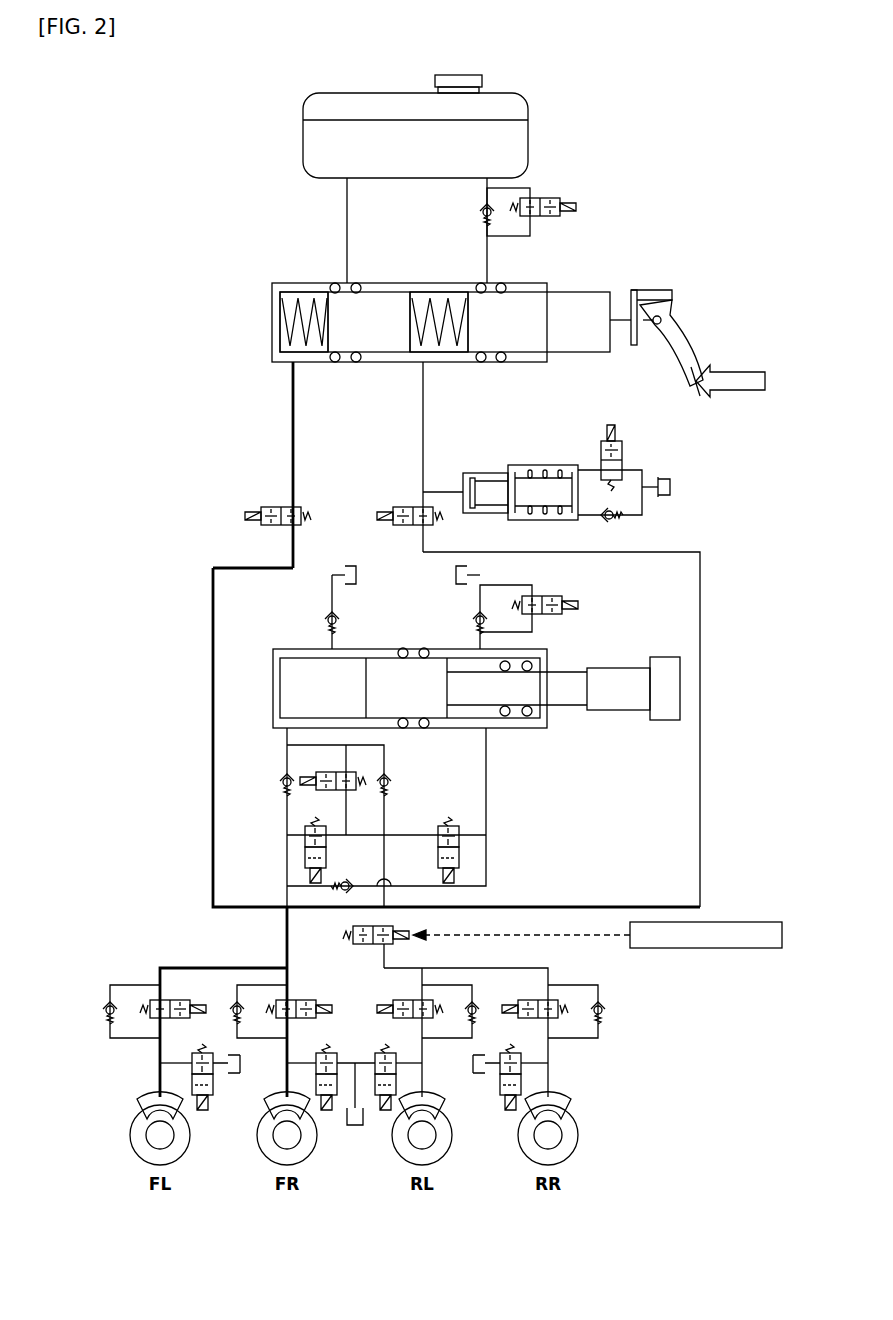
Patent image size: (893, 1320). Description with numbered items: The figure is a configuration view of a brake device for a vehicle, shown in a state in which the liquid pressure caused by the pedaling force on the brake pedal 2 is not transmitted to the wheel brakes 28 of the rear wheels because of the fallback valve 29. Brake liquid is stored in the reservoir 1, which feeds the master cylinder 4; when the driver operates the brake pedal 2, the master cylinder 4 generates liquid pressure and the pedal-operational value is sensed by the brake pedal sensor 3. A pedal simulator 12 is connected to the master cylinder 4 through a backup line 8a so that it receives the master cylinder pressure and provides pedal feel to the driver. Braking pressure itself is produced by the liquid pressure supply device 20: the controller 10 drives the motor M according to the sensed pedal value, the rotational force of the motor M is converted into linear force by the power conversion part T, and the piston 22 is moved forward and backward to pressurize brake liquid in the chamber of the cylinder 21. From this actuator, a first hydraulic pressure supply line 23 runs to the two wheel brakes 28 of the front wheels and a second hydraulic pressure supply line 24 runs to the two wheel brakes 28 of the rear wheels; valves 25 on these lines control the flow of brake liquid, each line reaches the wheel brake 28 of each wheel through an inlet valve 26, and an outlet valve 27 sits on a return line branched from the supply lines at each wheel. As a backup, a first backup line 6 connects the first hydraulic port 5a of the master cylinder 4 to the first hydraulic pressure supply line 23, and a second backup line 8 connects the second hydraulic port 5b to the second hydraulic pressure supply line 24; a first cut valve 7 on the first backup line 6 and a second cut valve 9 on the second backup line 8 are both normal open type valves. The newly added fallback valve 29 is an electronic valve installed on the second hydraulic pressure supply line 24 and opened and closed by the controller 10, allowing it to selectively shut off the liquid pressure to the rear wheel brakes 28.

The reservoir 1 is at (528, 128).
The brake pedal 2 is at (696, 372).
The brake pedal sensor 3 is at (650, 298).
The master cylinder 4 is at (372, 362).
The first hydraulic port 5a is at (293, 362).
The second hydraulic port 5b is at (425, 362).
The first backup line 6 is at (293, 438).
The first cut valve 7 is at (270, 507).
The second backup line 8 is at (423, 426).
The backup line 8a is at (437, 492).
The second cut valve 9 is at (400, 507).
The controller 10 is at (740, 922).
The pedal simulator 12 is at (684, 516).
The liquid pressure supply device 20 is at (469, 680).
The cylinder 21 is at (508, 728).
The piston 22 is at (560, 690).
The first hydraulic pressure supply line 23 is at (287, 762).
The second hydraulic pressure supply line 24 is at (486, 806).
The valves 25 is at (330, 862).
The inlet valve 26 is at (177, 1000).
The outlet valve 27 is at (212, 1090).
The wheel brake 28 is at (122, 1108).
The fallback valve 29 is at (360, 945).
The motor M is at (666, 693).
The power conversion part T is at (620, 698).